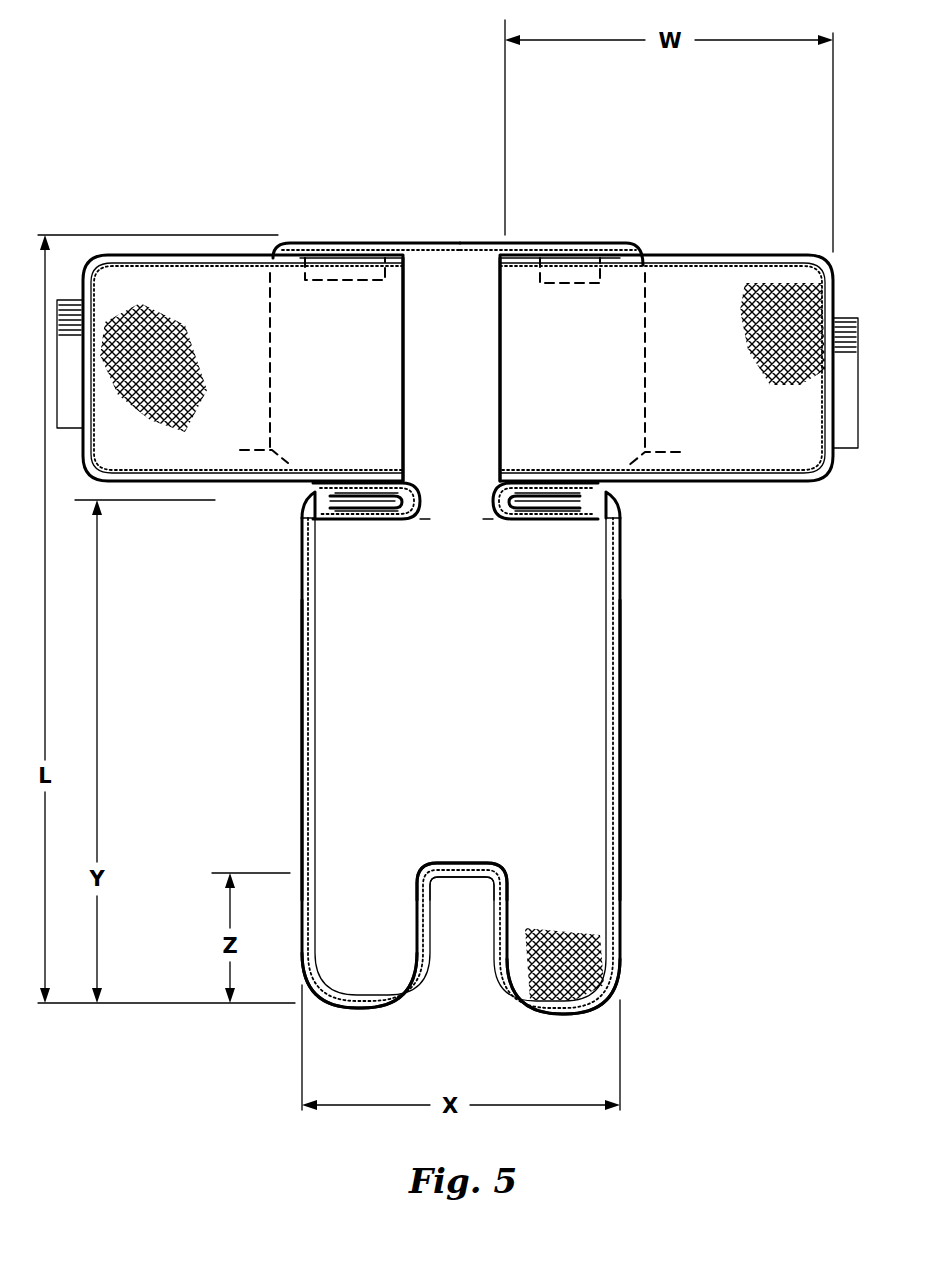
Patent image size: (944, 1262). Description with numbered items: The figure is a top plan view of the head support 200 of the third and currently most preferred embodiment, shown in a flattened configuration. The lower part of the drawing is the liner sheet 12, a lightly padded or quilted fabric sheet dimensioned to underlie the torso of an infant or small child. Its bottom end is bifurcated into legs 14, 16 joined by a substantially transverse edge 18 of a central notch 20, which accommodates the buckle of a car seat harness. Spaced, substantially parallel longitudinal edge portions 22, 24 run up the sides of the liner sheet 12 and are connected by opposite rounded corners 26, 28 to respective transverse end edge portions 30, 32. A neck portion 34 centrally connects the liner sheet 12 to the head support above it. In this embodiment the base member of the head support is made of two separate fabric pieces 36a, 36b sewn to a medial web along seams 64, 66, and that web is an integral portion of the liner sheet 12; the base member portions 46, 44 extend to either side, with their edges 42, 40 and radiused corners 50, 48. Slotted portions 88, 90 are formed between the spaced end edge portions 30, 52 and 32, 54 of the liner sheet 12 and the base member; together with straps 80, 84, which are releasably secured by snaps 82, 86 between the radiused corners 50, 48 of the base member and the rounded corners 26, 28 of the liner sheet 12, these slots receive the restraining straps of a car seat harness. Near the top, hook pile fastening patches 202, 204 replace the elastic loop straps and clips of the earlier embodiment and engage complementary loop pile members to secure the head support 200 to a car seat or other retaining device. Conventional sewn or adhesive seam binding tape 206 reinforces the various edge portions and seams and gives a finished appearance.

The seam 64 is at (400, 407).
The seam 66 is at (500, 412).
The base member portion 46 is at (282, 252).
The base member portion 44 is at (650, 258).
The fabric piece 36a is at (385, 250).
The fabric piece 36b is at (518, 250).
The hook pile fastening patch 202 is at (335, 250).
The hook pile fastening patch 204 is at (580, 250).
The base member edge 42 is at (268, 398).
The base member edge 40 is at (650, 412).
The radiused corner 50 is at (240, 450).
The radiused corner 48 is at (680, 452).
The seam binding tape 206 is at (770, 285).
The end edge portion 52 is at (420, 484).
The end edge portion 54 is at (492, 486).
The strap 80 is at (320, 498).
The strap 84 is at (600, 500).
The slotted portion 88 is at (345, 512).
The transverse end edge portion 30 is at (385, 510).
The slotted portion 90 is at (552, 512).
The transverse end edge portion 32 is at (522, 512).
The snap 82 is at (305, 525).
The snap 86 is at (615, 525).
The rounded corner 26 is at (302, 517).
The rounded corner 28 is at (625, 520).
The neck portion 34 is at (450, 528).
The head support 200 is at (262, 690).
The liner sheet 12 is at (440, 703).
The longitudinal edge portion 22 is at (302, 805).
The longitudinal edge portion 24 is at (620, 795).
The transverse edge 18 is at (456, 870).
The central notch 20 is at (452, 908).
The leg 14 is at (366, 967).
The leg 16 is at (540, 1012).